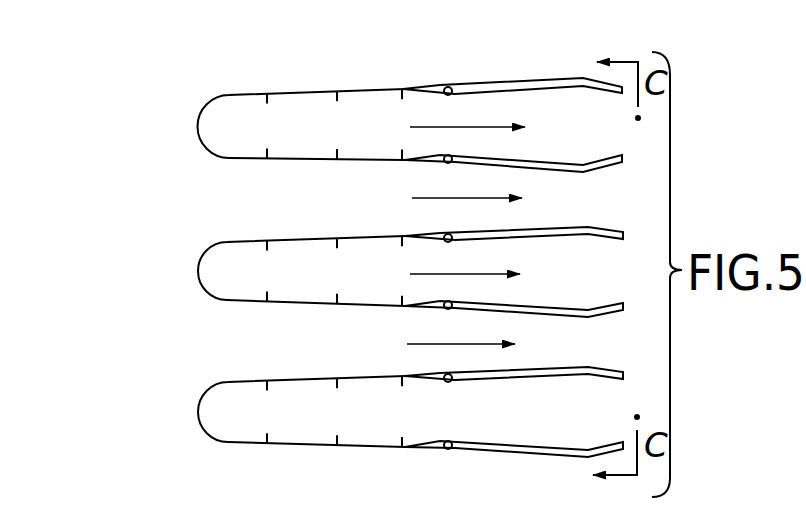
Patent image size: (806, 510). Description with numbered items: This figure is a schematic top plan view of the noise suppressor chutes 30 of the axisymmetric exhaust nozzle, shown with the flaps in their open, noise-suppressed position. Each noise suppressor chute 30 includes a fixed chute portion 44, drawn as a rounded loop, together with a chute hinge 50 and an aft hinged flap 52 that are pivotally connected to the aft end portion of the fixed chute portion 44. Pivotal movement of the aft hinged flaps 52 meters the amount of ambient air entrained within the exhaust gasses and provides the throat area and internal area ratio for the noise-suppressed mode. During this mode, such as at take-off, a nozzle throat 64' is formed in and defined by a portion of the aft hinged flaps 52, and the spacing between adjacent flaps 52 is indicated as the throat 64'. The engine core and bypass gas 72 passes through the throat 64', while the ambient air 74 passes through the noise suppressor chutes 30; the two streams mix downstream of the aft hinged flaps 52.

The noise suppressor chute 30 is at (209, 161).
The fixed chute portion 44 is at (310, 160).
The chute hinge 50 is at (449, 383).
The aft hinged flap 52 is at (590, 80).
The nozzle throat 64' is at (535, 268).
The engine core and bypass gas 72 is at (432, 198).
The ambient air 74 is at (443, 127).